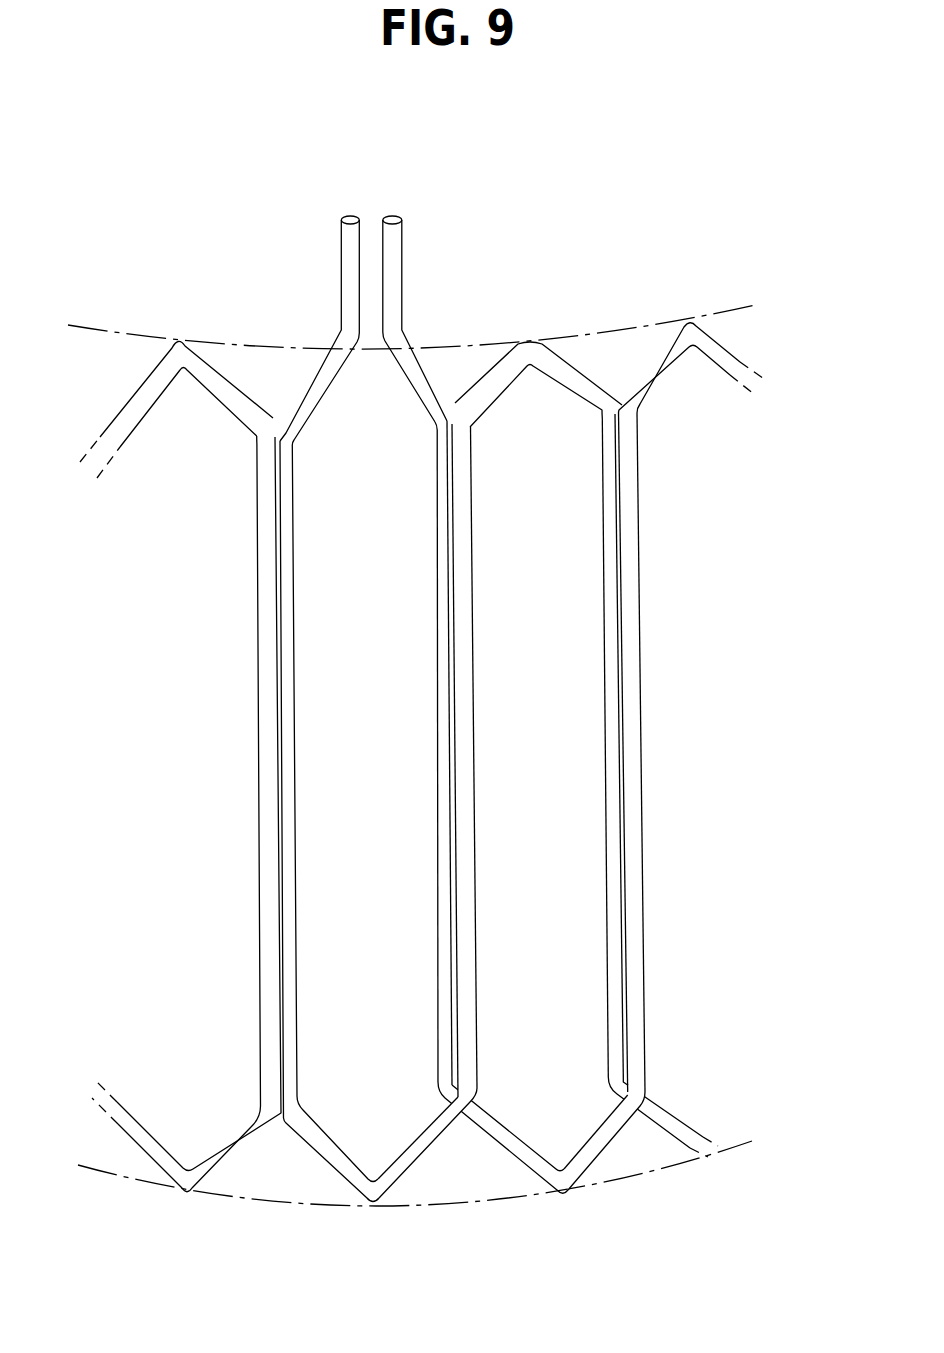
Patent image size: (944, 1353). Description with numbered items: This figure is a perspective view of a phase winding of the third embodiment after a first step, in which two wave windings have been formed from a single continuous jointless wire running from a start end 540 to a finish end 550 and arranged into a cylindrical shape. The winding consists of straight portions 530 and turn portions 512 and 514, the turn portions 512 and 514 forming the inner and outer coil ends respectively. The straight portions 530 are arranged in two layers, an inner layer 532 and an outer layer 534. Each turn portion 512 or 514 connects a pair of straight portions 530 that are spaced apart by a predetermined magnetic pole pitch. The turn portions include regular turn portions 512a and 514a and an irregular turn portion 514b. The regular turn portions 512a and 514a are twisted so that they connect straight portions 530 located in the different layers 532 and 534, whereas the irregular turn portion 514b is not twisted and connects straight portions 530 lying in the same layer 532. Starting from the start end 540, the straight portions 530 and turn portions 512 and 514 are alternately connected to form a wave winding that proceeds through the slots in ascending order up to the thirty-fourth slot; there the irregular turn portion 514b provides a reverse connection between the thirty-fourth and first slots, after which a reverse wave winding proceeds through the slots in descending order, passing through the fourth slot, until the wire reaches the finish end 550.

The turn portion 512 is at (689, 1113).
The regular turn portion 512a is at (565, 1182).
The turn portion 514 is at (742, 335).
The regular turn portion 514a is at (181, 352).
The irregular turn portion 514b is at (523, 352).
The straight portion 530 is at (679, 752).
The inner layer 532 is at (611, 681).
The outer layer 534 is at (630, 698).
The start end 540 is at (398, 216).
The finish end 550 is at (352, 216).